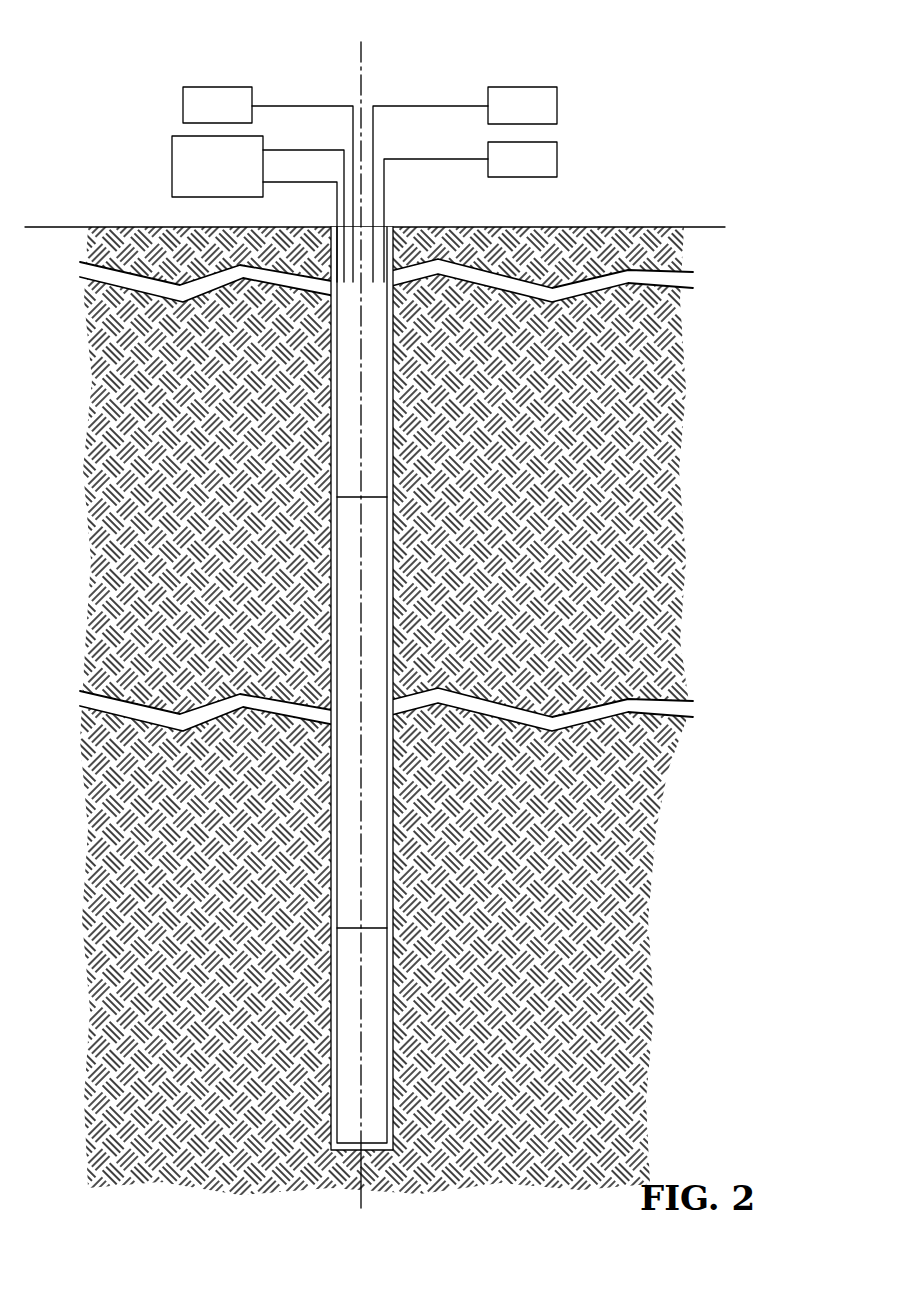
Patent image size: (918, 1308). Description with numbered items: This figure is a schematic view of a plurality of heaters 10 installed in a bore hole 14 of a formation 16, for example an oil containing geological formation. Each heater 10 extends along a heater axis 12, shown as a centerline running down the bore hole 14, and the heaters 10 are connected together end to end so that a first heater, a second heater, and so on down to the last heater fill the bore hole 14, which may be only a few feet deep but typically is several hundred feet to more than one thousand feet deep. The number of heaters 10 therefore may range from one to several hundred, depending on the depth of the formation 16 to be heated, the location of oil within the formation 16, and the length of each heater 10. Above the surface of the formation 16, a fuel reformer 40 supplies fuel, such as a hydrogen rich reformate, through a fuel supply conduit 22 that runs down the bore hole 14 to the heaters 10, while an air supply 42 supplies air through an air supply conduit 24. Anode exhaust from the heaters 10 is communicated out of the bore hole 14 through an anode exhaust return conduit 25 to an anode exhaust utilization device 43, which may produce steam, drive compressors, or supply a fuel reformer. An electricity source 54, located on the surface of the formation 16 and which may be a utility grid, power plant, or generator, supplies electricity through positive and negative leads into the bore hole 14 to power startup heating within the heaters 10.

The heater 10 is at (370, 401).
The heater axis 12 is at (360, 82).
The bore hole 14 is at (333, 345).
The formation 16 is at (386, 711).
The fuel supply conduit 22 is at (373, 233).
The air supply conduit 24 is at (384, 253).
The anode exhaust return conduit 25 is at (353, 146).
The fuel reformer 40 is at (522, 105).
The air supply 42 is at (522, 159).
The anode exhaust utilization device 43 is at (217, 105).
The electricity source 54 is at (217, 166).